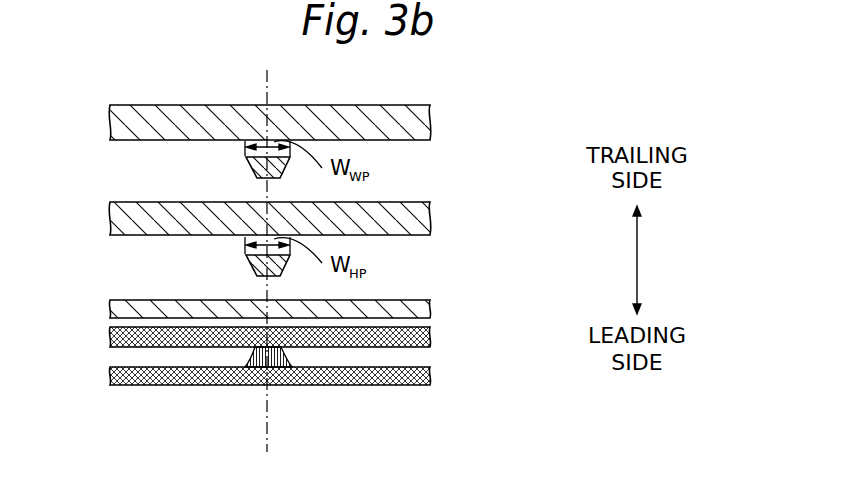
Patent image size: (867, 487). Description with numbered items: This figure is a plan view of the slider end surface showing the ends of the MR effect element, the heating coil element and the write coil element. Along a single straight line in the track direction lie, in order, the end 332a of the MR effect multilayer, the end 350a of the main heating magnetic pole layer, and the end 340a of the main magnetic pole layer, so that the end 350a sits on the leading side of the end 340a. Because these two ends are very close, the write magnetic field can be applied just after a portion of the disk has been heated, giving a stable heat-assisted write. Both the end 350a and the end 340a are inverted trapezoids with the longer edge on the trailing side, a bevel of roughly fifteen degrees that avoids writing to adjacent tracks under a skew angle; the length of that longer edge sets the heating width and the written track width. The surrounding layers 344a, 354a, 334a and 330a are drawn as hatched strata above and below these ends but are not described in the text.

The write pole layer 344a is at (412, 120).
The end of the main magnetic pole layer 340a is at (250, 164).
The heater layer 354a is at (412, 216).
The end of the main heating magnetic pole layer 350a is at (250, 262).
The top shield 334a is at (428, 337).
The end of the MR effect multilayer 332a is at (284, 358).
The bottom shield 330a is at (428, 377).